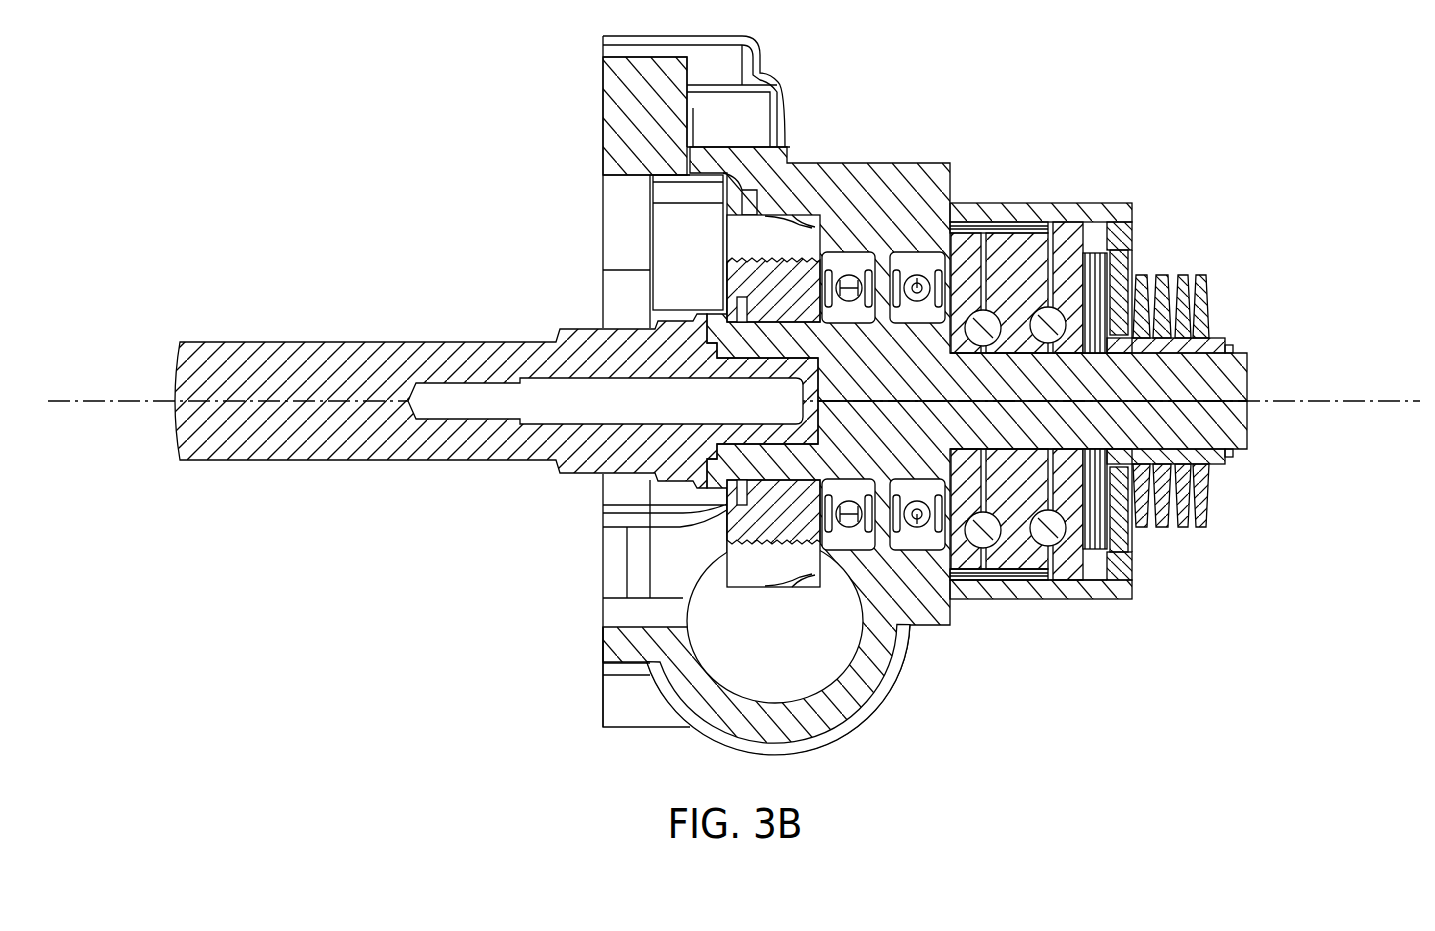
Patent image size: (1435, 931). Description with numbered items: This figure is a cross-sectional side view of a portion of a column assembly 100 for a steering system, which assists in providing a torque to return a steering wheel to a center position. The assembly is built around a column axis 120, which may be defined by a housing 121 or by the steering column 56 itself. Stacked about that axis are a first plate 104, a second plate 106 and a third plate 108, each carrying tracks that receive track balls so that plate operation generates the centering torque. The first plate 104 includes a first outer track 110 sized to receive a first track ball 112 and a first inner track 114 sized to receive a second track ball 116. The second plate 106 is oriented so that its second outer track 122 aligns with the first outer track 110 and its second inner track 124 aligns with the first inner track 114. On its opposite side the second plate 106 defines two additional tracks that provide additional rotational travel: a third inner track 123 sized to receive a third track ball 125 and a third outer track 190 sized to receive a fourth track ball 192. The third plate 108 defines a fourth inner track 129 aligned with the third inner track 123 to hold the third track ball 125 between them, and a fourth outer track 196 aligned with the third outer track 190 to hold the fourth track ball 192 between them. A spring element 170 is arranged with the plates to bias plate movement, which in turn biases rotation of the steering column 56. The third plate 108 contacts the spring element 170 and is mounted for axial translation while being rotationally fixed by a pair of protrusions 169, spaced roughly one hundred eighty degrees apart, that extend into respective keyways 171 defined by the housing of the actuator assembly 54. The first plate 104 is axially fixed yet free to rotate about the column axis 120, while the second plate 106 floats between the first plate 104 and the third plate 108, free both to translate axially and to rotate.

The column assembly 100 is at (1230, 179).
The column axis 120 is at (96, 397).
The steering column 56 is at (1252, 368).
The actuator assembly 54 is at (1054, 196).
The housing 121 is at (1126, 204).
The spring element 170 is at (1122, 258).
The keyways 171 is at (1020, 231).
The first inner track 114 is at (971, 296).
The second track ball 116 is at (1007, 299).
The pair of protrusions 169 is at (1093, 246).
The second inner track 124 is at (992, 296).
The third track ball 125 is at (1052, 341).
The third inner track 123 is at (1010, 350).
The first plate 104 is at (962, 585).
The third outer track 190 is at (1030, 497).
The third plate 108 is at (1076, 498).
The fourth track ball 192 is at (1062, 547).
The first outer track 110 is at (974, 555).
The fourth outer track 196 is at (1058, 538).
The second outer track 122 is at (998, 558).
The second plate 106 is at (1029, 578).
The first track ball 112 is at (1052, 574).
The fourth inner track 129 is at (1084, 323).